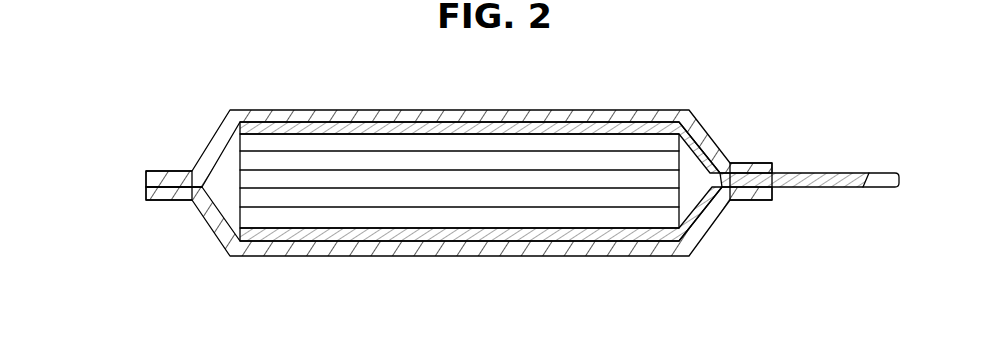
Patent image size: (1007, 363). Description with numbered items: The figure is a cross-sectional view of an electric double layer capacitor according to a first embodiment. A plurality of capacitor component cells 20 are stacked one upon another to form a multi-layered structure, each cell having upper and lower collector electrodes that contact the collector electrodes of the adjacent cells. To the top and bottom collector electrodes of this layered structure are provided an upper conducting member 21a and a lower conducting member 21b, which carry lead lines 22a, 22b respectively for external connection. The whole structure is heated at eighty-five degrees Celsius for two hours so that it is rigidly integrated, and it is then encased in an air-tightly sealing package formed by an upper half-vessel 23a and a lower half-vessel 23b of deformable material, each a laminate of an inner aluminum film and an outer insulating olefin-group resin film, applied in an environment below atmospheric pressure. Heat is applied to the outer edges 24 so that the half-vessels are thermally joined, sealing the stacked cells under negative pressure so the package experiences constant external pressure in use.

The capacitor component cells 20 is at (340, 217).
The upper conducting member 21a is at (453, 127).
The lower conducting member 21b is at (457, 241).
The lead line 22a is at (887, 173).
The lead line 22b is at (820, 173).
The upper half-vessel 23a is at (540, 108).
The lower half-vessel 23b is at (550, 256).
The outer edges 24 is at (157, 171).